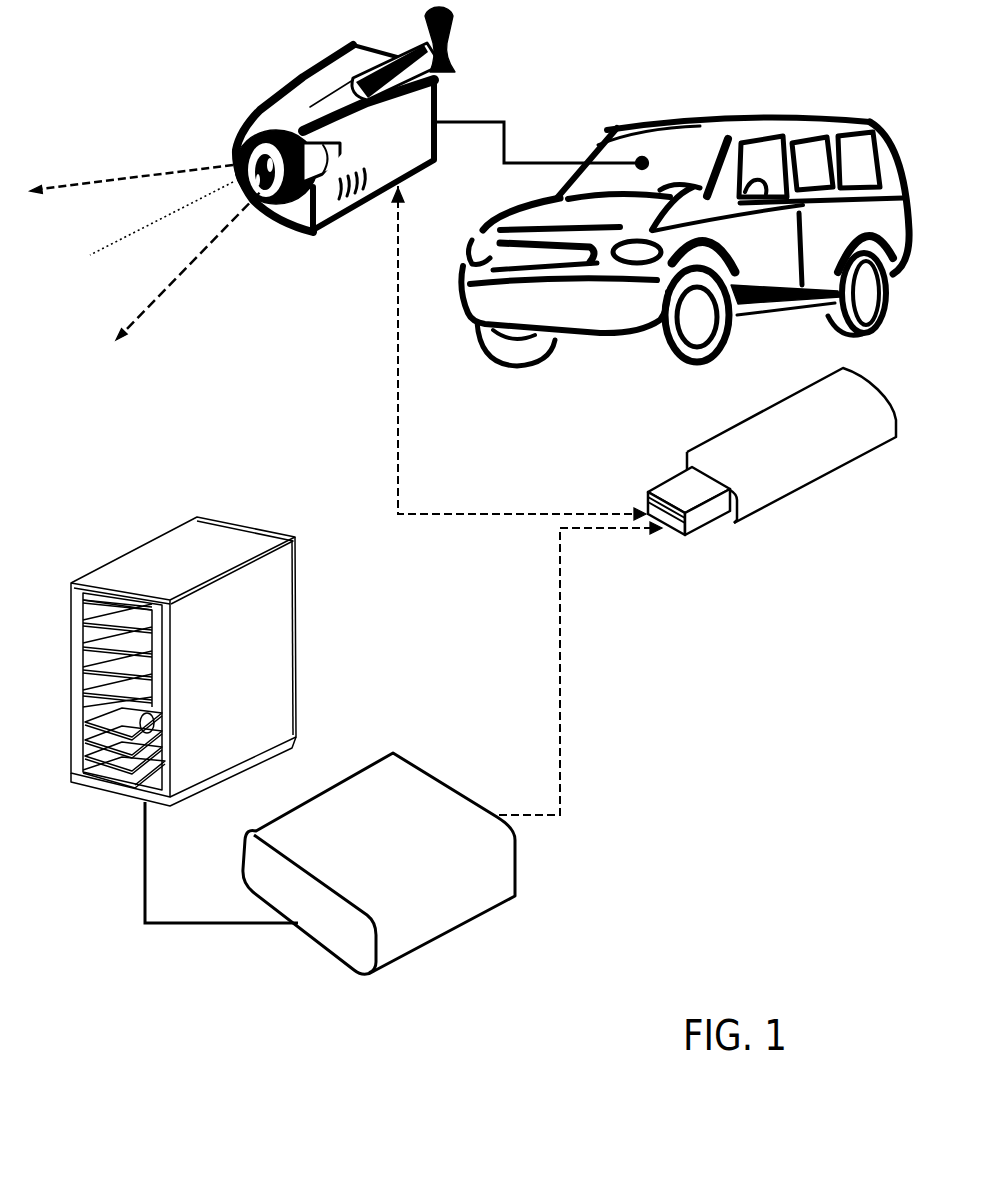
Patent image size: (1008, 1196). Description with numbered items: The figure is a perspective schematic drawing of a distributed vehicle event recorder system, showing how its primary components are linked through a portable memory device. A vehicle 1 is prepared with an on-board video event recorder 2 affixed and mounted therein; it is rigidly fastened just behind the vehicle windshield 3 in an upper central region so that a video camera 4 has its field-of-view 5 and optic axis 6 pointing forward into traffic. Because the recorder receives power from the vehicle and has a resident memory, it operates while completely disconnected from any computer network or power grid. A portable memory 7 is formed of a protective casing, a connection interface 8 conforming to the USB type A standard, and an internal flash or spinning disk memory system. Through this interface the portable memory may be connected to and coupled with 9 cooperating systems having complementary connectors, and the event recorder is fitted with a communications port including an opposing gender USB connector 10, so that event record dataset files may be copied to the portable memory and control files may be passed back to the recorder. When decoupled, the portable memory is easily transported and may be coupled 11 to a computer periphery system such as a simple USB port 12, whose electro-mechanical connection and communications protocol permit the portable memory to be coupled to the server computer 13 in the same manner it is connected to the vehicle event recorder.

The vehicle 1 is at (783, 118).
The on-board video event recorder 2 is at (645, 158).
The vehicle windshield 3 is at (607, 128).
The video camera 4 is at (325, 80).
The field-of-view 5 is at (178, 255).
The optic axis 6 is at (128, 237).
The portable memory 7 is at (750, 437).
The connection interface 8 is at (700, 522).
The coupling to cooperating systems 9 is at (447, 513).
The USB connector 10 is at (410, 185).
The coupling to computer periphery system 11 is at (565, 683).
The USB port 12 is at (460, 910).
The server computer 13 is at (283, 677).